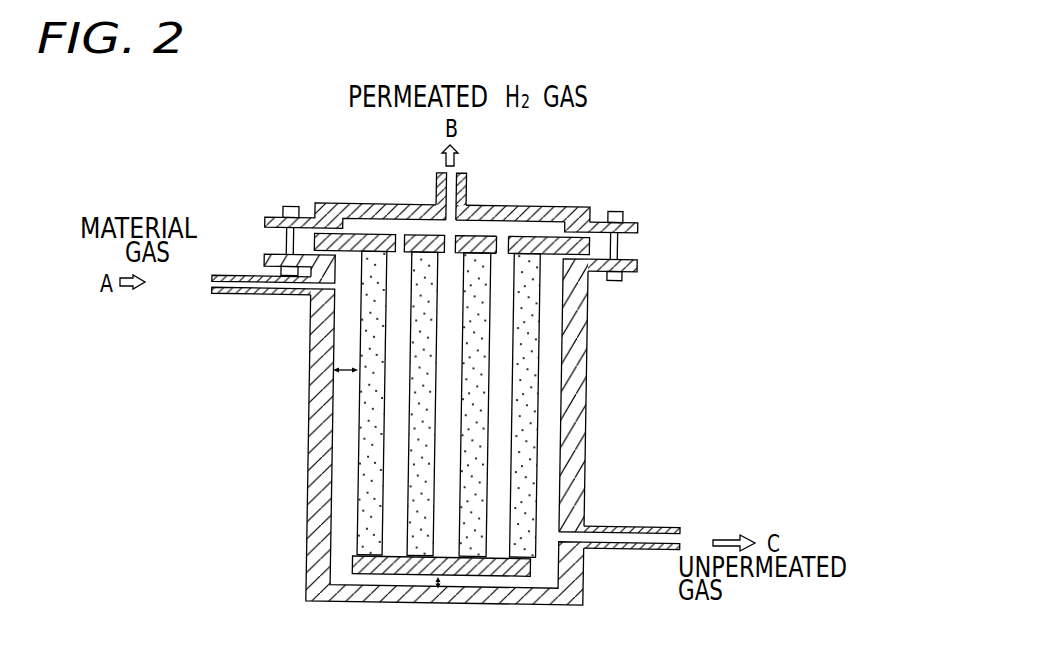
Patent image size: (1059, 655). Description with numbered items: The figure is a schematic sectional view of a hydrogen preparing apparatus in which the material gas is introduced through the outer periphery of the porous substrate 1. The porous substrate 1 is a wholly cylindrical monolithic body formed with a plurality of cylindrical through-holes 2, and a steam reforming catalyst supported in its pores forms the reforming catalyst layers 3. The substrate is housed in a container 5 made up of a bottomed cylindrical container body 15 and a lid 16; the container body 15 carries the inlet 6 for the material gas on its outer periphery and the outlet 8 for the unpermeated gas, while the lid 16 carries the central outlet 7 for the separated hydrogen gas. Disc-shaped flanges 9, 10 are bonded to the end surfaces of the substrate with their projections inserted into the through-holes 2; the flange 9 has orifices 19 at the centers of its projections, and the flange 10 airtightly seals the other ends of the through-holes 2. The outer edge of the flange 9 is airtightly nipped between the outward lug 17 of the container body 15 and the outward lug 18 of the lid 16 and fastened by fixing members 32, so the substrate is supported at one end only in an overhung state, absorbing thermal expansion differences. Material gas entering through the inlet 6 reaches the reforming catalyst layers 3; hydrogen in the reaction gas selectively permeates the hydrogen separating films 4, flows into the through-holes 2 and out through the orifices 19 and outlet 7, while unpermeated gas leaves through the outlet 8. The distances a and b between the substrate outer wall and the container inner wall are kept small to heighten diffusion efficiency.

The porous substrate 1 is at (537, 383).
The through-holes 2 is at (495, 423).
The reforming catalyst layers 3 is at (518, 488).
The hydrogen separating films 4 is at (513, 345).
The container 5 is at (810, 208).
The inlet 6 is at (247, 297).
The outlet 7 is at (465, 182).
The outlet 8 is at (627, 548).
The flange 9 is at (587, 245).
The flange 10 is at (354, 568).
The container body 15 is at (592, 303).
The lid 16 is at (568, 207).
The outward lug 17 is at (637, 263).
The outward lug 18 is at (637, 227).
The orifices 19 is at (502, 233).
The fixing members 32 is at (612, 212).
The distance a is at (345, 384).
The distance b is at (441, 590).